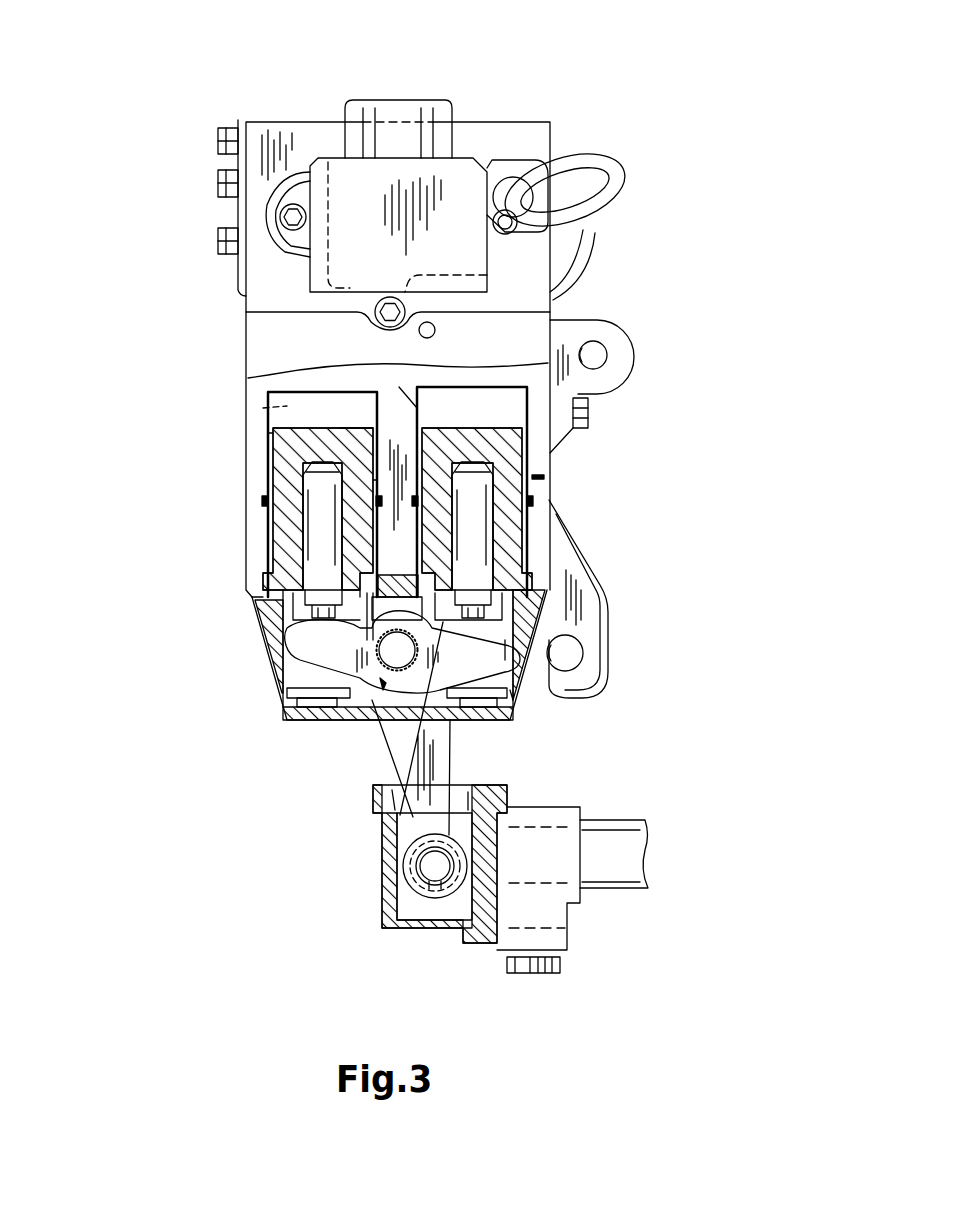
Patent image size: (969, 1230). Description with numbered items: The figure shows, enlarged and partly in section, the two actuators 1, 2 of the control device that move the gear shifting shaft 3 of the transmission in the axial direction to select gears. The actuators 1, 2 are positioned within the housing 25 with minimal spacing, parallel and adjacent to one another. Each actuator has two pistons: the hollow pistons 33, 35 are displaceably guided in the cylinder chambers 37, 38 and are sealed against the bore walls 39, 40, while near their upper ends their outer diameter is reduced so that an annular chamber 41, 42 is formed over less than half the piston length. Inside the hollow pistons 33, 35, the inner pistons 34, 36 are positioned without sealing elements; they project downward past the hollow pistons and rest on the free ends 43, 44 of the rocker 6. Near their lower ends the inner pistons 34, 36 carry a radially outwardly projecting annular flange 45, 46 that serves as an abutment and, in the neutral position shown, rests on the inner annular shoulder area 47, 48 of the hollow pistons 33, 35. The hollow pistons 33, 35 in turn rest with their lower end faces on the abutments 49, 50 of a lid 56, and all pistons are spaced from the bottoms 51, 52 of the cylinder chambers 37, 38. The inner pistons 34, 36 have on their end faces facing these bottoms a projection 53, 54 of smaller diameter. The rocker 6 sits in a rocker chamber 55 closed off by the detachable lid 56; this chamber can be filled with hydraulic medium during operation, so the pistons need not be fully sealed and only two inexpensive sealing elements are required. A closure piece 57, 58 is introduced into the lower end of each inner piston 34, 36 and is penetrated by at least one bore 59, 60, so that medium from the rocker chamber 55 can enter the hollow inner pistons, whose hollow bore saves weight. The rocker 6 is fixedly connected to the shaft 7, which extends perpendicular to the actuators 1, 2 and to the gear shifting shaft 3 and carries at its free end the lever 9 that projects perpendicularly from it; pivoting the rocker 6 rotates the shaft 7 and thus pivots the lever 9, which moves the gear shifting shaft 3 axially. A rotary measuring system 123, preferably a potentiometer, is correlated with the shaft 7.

The actuator 1 is at (257, 465).
The actuator 2 is at (552, 478).
The gear shifting shaft 3 is at (605, 877).
The rocker 6 is at (393, 656).
The shaft 7 is at (372, 698).
The lever 9 is at (385, 785).
The housing 25 is at (257, 353).
The hollow piston 33 is at (300, 543).
The inner piston 34 is at (278, 568).
The hollow piston 35 is at (520, 477).
The inner piston 36 is at (530, 420).
The cylinder chamber 37 is at (292, 412).
The cylinder chamber 38 is at (487, 397).
The bore wall 39 is at (270, 433).
The bore wall 40 is at (403, 390).
The annular chamber 41 is at (358, 428).
The annular chamber 42 is at (520, 447).
The free end of the rocker 43 is at (278, 688).
The free end of the rocker 44 is at (490, 640).
The annular flange 45 is at (258, 593).
The annular flange 46 is at (440, 648).
The inner annular shoulder area 47 is at (355, 703).
The inner annular shoulder area 48 is at (513, 710).
The abutment 49 is at (300, 712).
The abutment 50 is at (520, 600).
The bottom of the cylinder chamber 51 is at (377, 396).
The bottom of the cylinder chamber 52 is at (448, 398).
The projection 53 is at (374, 482).
The projection 54 is at (399, 387).
The rocker chamber 55 is at (383, 683).
The lid 56 is at (513, 700).
The closure piece 57 is at (292, 643).
The closure piece 58 is at (405, 810).
The bore 59 is at (330, 617).
The bore 60 is at (510, 718).
The rotary measuring system 123 is at (343, 182).